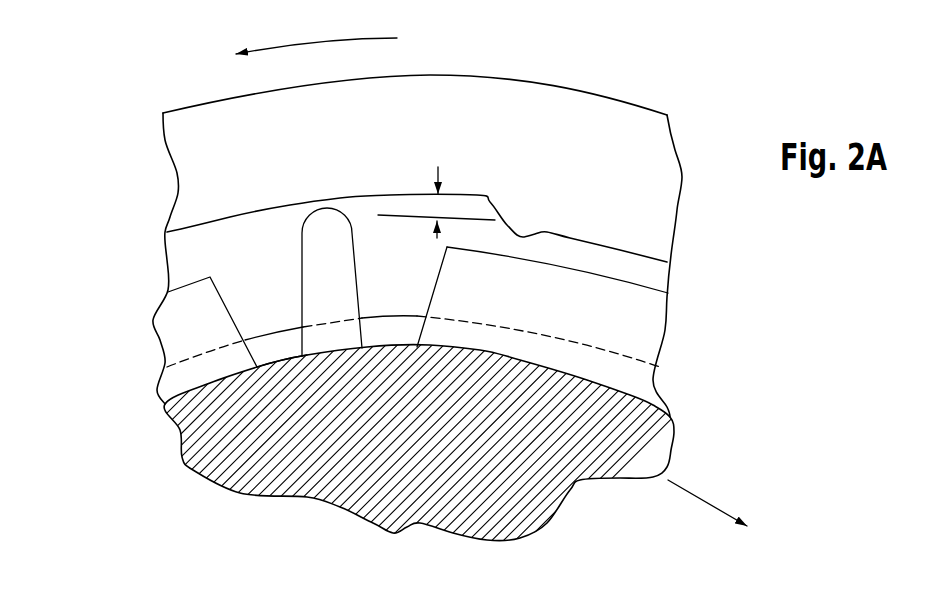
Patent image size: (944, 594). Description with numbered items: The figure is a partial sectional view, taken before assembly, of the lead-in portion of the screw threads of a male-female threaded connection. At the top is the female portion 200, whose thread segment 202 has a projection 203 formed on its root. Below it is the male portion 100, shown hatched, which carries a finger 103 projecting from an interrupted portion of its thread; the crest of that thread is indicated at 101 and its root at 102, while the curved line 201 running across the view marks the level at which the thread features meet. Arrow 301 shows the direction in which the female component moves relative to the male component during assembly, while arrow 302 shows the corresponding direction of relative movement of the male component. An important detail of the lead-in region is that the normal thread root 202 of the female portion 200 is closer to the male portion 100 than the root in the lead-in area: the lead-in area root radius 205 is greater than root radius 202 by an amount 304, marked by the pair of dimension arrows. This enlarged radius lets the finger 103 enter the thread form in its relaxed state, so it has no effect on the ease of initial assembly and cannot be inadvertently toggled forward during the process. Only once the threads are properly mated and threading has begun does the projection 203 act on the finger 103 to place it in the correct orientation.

The male portion 100 is at (569, 524).
The thread crest 101 is at (168, 287).
The thread root 102 is at (284, 359).
The finger 103 is at (302, 243).
The female portion 200 is at (156, 79).
The interface layer line 201 is at (397, 318).
The thread segment root 202 is at (667, 262).
The projection 203 is at (517, 235).
The lead-in area root radius 205 is at (178, 229).
The arrow 301 is at (375, 38).
The arrow 302 is at (687, 498).
The amount of radius increase 304 is at (437, 236).